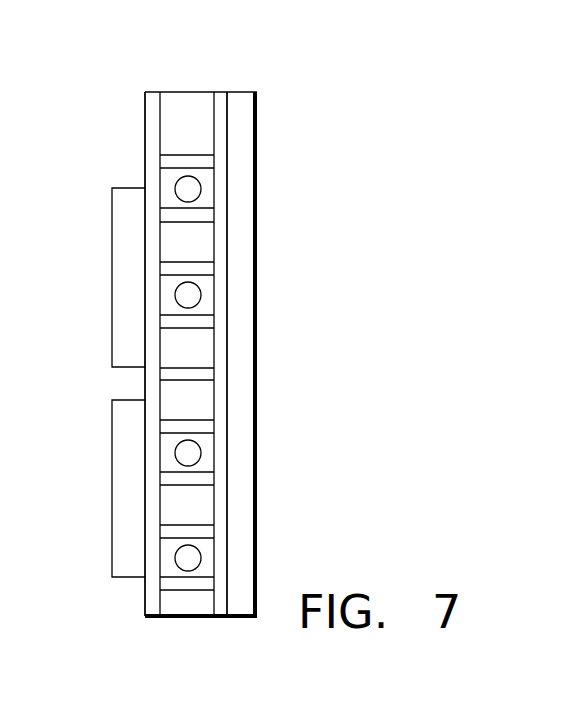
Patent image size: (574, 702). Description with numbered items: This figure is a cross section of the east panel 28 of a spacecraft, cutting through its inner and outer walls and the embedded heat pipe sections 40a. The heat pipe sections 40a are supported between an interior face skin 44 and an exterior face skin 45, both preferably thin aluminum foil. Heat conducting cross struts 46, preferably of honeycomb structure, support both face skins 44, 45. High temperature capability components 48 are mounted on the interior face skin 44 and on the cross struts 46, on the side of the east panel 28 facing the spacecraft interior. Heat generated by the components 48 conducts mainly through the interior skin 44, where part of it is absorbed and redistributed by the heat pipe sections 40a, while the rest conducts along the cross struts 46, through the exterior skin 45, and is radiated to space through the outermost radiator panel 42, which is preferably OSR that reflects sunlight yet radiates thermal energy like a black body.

The east panel 28 is at (213, 323).
The heat pipe sections 40a is at (189, 295).
The radiator panel 42 is at (242, 120).
The interior face skin 44 is at (146, 91).
The exterior face skin 45 is at (218, 91).
The cross struts 46 is at (190, 367).
The high temperature capability components 48 is at (112, 276).